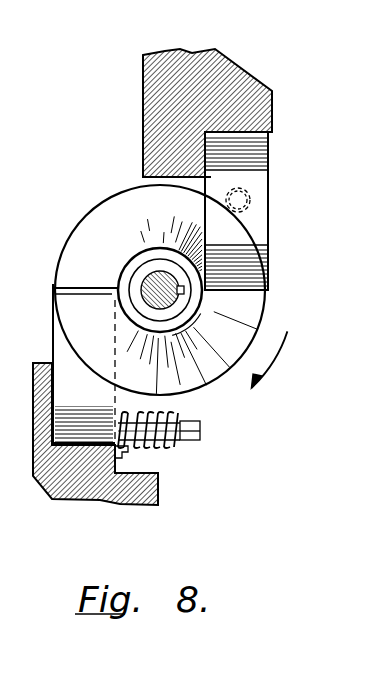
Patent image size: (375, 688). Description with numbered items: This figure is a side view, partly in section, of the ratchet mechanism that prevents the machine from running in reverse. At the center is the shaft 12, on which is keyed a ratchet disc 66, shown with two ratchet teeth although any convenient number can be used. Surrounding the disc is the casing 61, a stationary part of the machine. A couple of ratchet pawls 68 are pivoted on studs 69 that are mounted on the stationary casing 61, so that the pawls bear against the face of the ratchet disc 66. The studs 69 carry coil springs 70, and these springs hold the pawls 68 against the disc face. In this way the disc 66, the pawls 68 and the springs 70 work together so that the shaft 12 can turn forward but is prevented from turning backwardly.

The shaft 12 is at (150, 273).
The casing 61 is at (153, 118).
The ratchet disc 66 is at (93, 220).
The ratchet pawls 68 is at (260, 200).
The studs 69 is at (202, 432).
The coil springs 70 is at (165, 449).